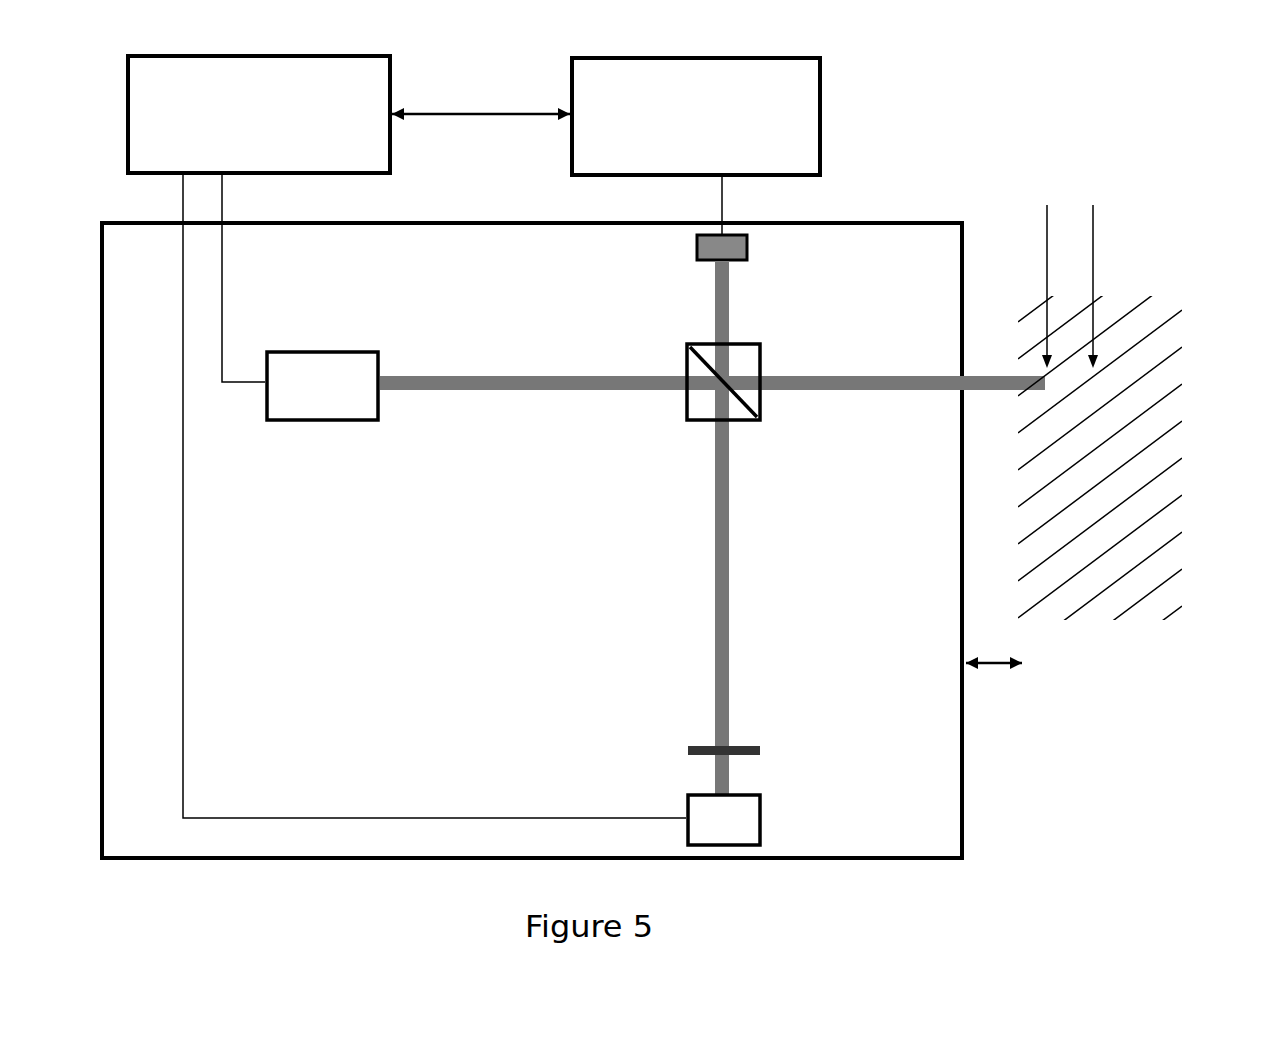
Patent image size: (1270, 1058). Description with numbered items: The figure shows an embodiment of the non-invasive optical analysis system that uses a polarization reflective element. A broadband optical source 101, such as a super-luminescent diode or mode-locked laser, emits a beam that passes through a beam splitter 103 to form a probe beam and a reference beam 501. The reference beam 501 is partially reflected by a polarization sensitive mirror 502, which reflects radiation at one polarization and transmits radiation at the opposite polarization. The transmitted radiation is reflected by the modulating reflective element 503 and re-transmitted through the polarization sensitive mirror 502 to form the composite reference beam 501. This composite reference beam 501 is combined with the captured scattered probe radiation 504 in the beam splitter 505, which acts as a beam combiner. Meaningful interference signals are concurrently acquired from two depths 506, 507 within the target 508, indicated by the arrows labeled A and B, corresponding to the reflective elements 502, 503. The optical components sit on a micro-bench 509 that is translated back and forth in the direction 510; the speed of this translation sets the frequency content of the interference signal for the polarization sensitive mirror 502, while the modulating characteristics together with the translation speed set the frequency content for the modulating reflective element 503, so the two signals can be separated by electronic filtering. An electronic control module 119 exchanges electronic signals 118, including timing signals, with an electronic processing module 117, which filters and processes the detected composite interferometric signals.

The electronic control module 119 is at (118, 105).
The electronic processing module 117 is at (824, 108).
The electronic signals 118 is at (502, 128).
The broadband optical source 101 is at (333, 430).
The beam splitter 103 is at (673, 413).
The beam splitter 505 is at (693, 332).
The captured scattered probe radiation 504 is at (893, 367).
The reference beam 501 is at (732, 545).
The polarization sensitive mirror 502 is at (687, 740).
The modulating reflective element 503 is at (763, 803).
The depth 506 is at (1043, 160).
The depth 507 is at (1097, 158).
The target 508 is at (1102, 635).
The micro-bench 509 is at (966, 777).
The direction of translation 510 is at (995, 673).